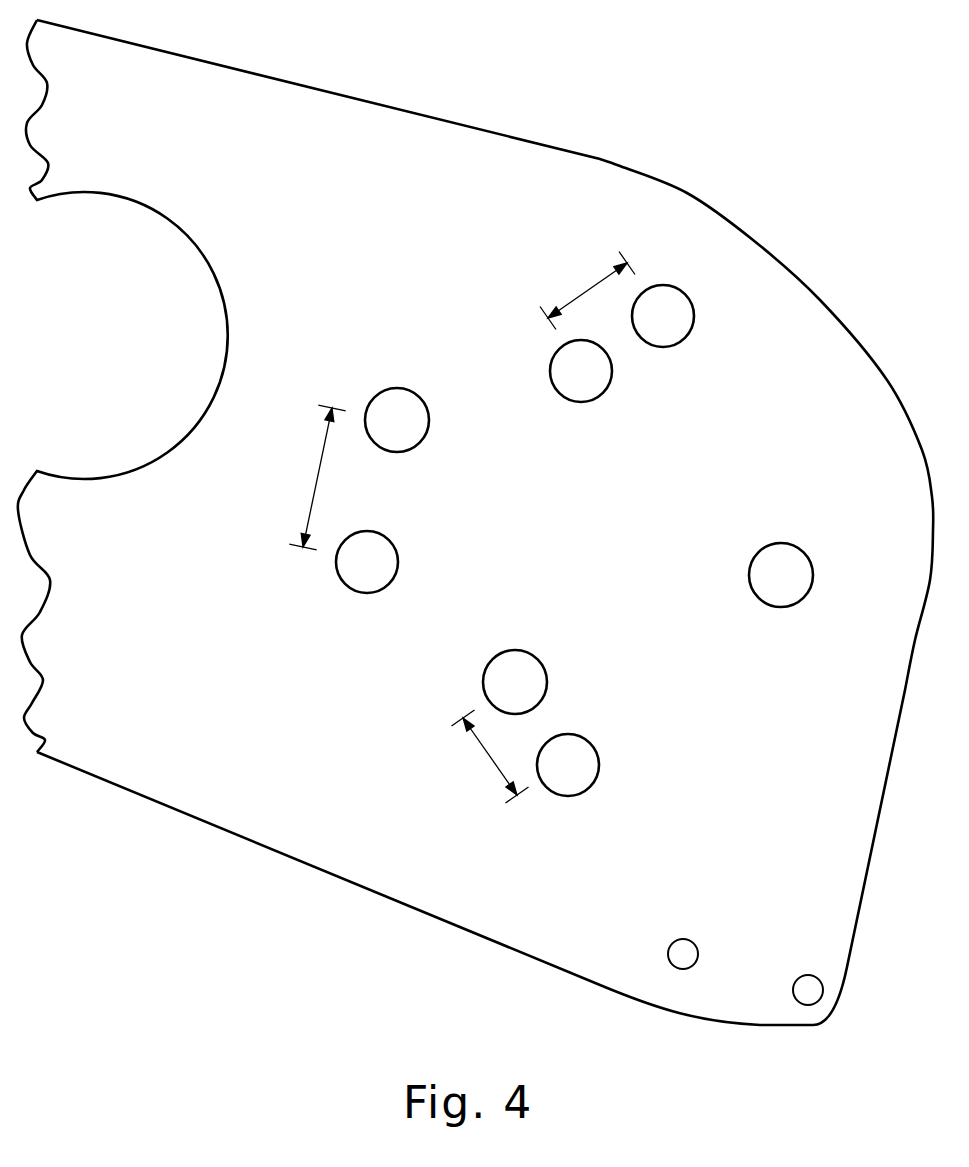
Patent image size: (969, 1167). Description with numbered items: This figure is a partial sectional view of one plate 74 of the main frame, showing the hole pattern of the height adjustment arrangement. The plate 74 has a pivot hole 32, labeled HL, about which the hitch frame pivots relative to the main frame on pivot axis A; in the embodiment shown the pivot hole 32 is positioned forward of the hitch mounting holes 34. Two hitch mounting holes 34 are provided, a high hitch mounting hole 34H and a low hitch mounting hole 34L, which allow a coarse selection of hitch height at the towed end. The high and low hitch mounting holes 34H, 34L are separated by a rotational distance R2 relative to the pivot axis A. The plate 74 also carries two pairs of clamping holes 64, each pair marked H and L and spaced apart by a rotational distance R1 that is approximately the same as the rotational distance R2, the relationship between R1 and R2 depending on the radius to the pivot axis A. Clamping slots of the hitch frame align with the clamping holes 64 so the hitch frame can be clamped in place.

The plate 74 is at (547, 147).
The hitch mounting hole 34 is at (400, 501).
The low hitch mounting hole 34L is at (393, 388).
The high hitch mounting hole 34H is at (365, 592).
The clamping hole 64 is at (670, 347).
The pivot hole 32 is at (800, 545).
The rotational distance between clamping holes R1 is at (583, 290).
The rotational distance between hitch mounting holes R2 is at (315, 477).